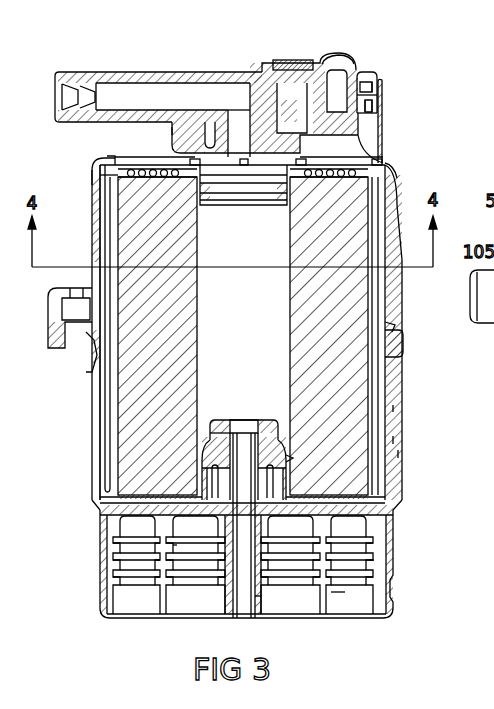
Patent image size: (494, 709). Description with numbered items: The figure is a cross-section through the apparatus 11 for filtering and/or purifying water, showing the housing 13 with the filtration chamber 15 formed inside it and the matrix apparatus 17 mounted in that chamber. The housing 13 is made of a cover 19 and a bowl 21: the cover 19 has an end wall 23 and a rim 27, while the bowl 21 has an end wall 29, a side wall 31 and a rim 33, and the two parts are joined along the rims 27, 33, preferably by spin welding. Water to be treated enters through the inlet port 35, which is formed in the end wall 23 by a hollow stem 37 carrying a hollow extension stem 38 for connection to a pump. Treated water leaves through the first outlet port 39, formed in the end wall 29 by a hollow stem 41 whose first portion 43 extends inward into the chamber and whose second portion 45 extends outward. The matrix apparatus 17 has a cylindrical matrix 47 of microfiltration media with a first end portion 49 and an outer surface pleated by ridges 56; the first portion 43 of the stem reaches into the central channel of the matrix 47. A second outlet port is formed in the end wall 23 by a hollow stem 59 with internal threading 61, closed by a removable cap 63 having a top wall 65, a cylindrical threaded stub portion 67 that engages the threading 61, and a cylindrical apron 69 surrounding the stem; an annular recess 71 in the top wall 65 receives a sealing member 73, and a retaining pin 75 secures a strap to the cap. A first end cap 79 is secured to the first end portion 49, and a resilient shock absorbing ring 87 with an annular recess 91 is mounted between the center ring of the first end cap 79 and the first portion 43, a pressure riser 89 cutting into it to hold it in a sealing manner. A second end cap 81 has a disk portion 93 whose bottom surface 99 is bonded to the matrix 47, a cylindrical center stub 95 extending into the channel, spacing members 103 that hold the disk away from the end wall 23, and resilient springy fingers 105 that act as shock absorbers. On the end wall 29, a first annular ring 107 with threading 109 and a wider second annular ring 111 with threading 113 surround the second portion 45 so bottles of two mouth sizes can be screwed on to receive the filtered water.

The apparatus for filtering and/or purifying water 11 is at (423, 98).
The housing 13 is at (393, 408).
The filtration chamber 15 is at (103, 397).
The matrix apparatus 17 is at (352, 302).
The cover 19 is at (95, 190).
The bowl 21 is at (393, 440).
The end wall 23 is at (172, 130).
The rim 27 is at (98, 362).
The end wall 29 is at (300, 508).
The side wall 31 is at (400, 453).
The rim 33 is at (87, 350).
The inlet port 35 is at (243, 134).
The hollow stem 37 is at (245, 103).
The hollow extension stem 38 is at (137, 72).
The first outlet port 39 is at (243, 452).
The hollow stem 41 is at (232, 545).
The first portion 43 is at (283, 445).
The second portion 45 is at (259, 598).
The cylindrical matrix 47 is at (173, 302).
The first end portion 49 is at (147, 492).
The ridges 56 is at (112, 222).
The hollow stem 59 is at (375, 108).
The internal threading 61 is at (360, 125).
The removable cap 63 is at (374, 95).
The top wall 65 is at (364, 80).
The cylindrical threaded stub portion 67 is at (320, 66).
The cylindrical apron 69 is at (368, 105).
The annular recess 71 is at (262, 116).
The sealing member 73 is at (368, 92).
The retaining pin 75 is at (335, 62).
The first end cap 79 is at (143, 503).
The second end cap 81 is at (140, 180).
The resilient shock absorbing ring 87 is at (228, 437).
The pressure riser 89 is at (288, 458).
The annular recess 91 is at (148, 537).
The disk portion 93 is at (386, 163).
The cylindrical center stub 95 is at (205, 190).
The bottom surface 99 is at (160, 180).
The spacing members 103 is at (195, 162).
The resilient springy fingers 105 is at (115, 167).
The first annular ring 107 is at (178, 545).
The threading 109 is at (166, 560).
The second annular ring 111 is at (380, 560).
The threading 113 is at (345, 592).